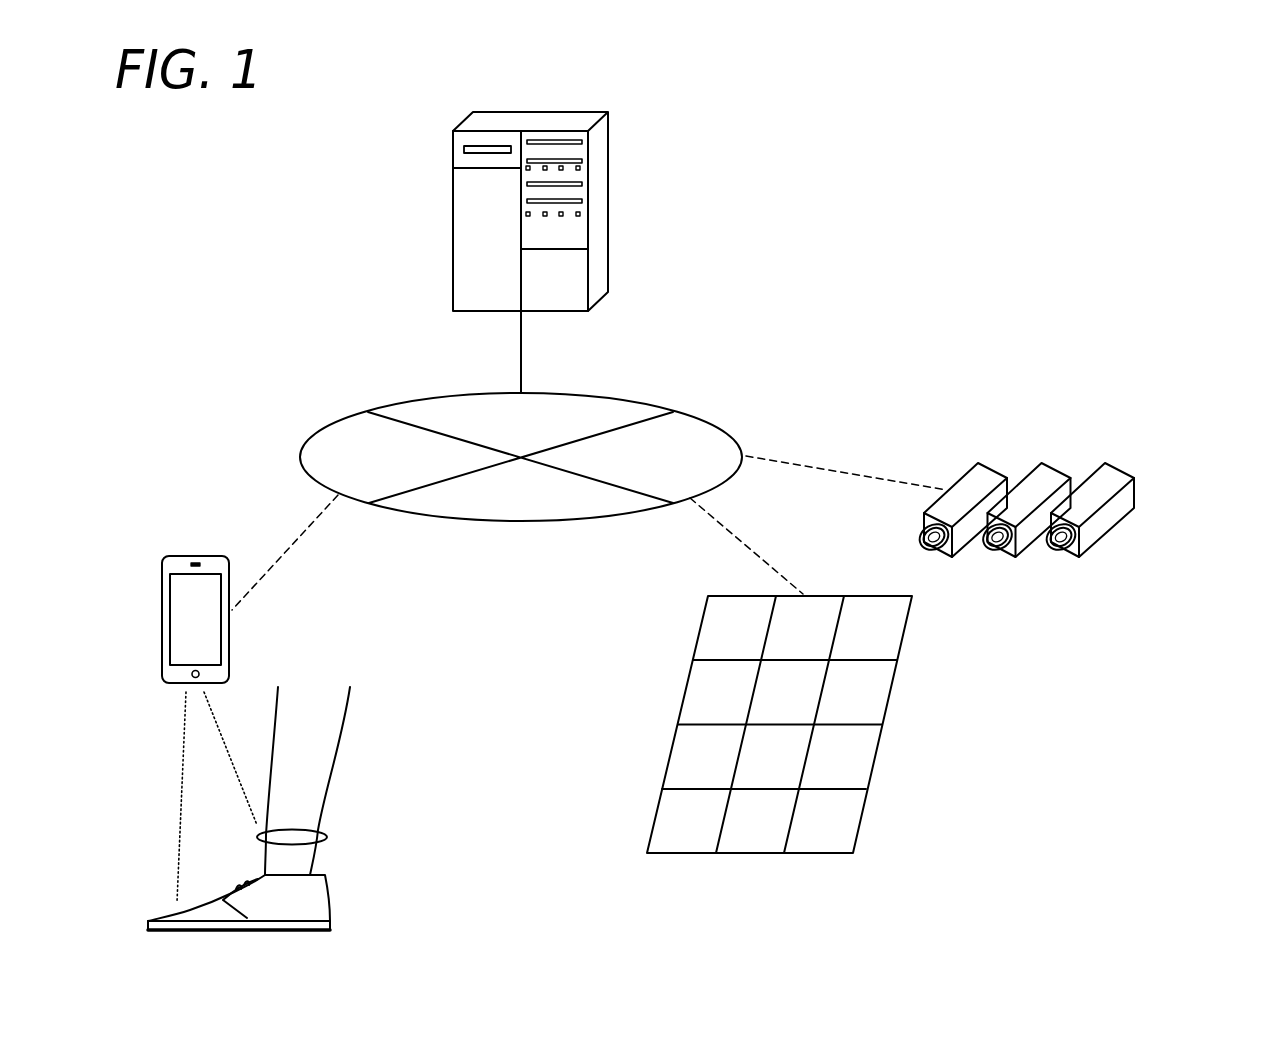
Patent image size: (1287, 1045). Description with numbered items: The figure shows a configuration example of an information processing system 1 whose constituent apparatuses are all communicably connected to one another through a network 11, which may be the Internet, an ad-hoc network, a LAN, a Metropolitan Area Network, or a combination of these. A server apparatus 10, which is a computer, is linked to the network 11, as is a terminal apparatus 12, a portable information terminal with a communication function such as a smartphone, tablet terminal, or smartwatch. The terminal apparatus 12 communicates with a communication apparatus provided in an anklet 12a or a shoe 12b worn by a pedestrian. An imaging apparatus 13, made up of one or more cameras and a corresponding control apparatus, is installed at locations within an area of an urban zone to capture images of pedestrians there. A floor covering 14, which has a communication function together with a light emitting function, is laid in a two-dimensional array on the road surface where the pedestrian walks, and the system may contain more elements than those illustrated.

The information processing system 1 is at (1097, 157).
The server apparatus 10 is at (453, 198).
The network 11 is at (440, 397).
The terminal apparatus 12 is at (196, 556).
The anklet 12a is at (326, 833).
The shoe 12b is at (331, 898).
The imaging apparatus 13 is at (1058, 470).
The floor covering 14 is at (890, 690).